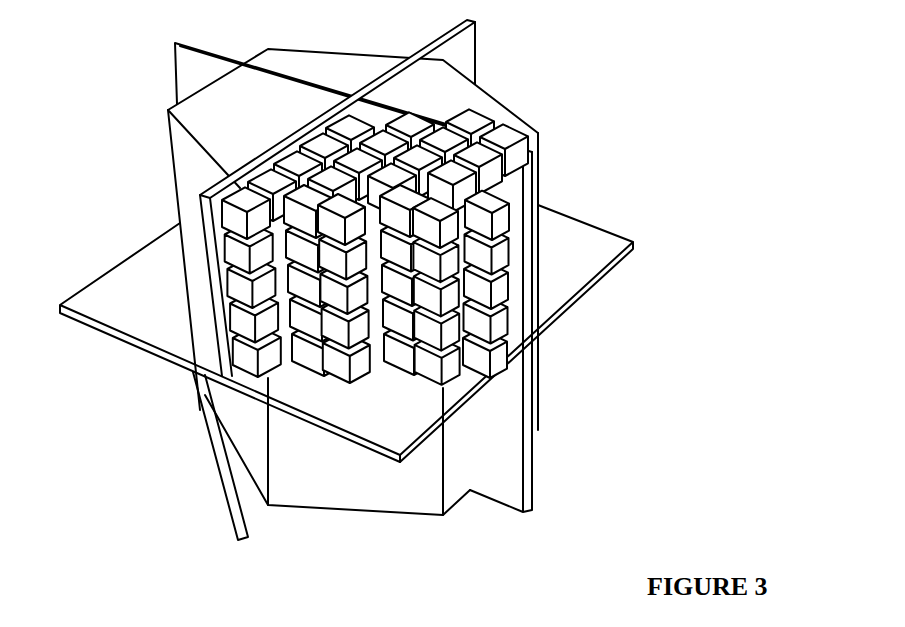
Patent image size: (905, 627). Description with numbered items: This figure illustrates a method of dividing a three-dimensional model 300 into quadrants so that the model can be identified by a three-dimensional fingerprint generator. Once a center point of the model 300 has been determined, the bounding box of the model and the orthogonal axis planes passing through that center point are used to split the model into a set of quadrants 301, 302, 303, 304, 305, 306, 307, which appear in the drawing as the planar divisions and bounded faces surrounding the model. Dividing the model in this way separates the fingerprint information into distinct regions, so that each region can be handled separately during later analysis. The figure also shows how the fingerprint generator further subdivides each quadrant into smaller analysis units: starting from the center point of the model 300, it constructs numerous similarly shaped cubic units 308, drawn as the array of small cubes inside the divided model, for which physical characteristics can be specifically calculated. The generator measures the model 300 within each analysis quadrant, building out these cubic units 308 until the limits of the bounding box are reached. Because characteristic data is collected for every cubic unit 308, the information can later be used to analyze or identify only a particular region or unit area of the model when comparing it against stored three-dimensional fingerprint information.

The 3D model 300 is at (482, 110).
The quadrant 301 is at (396, 420).
The quadrant 302 is at (584, 240).
The quadrant 303 is at (335, 60).
The quadrant 304 is at (115, 297).
The quadrant 305 is at (207, 397).
The quadrant 306 is at (333, 513).
The quadrant 307 is at (532, 400).
The cubic unit 308 is at (474, 308).